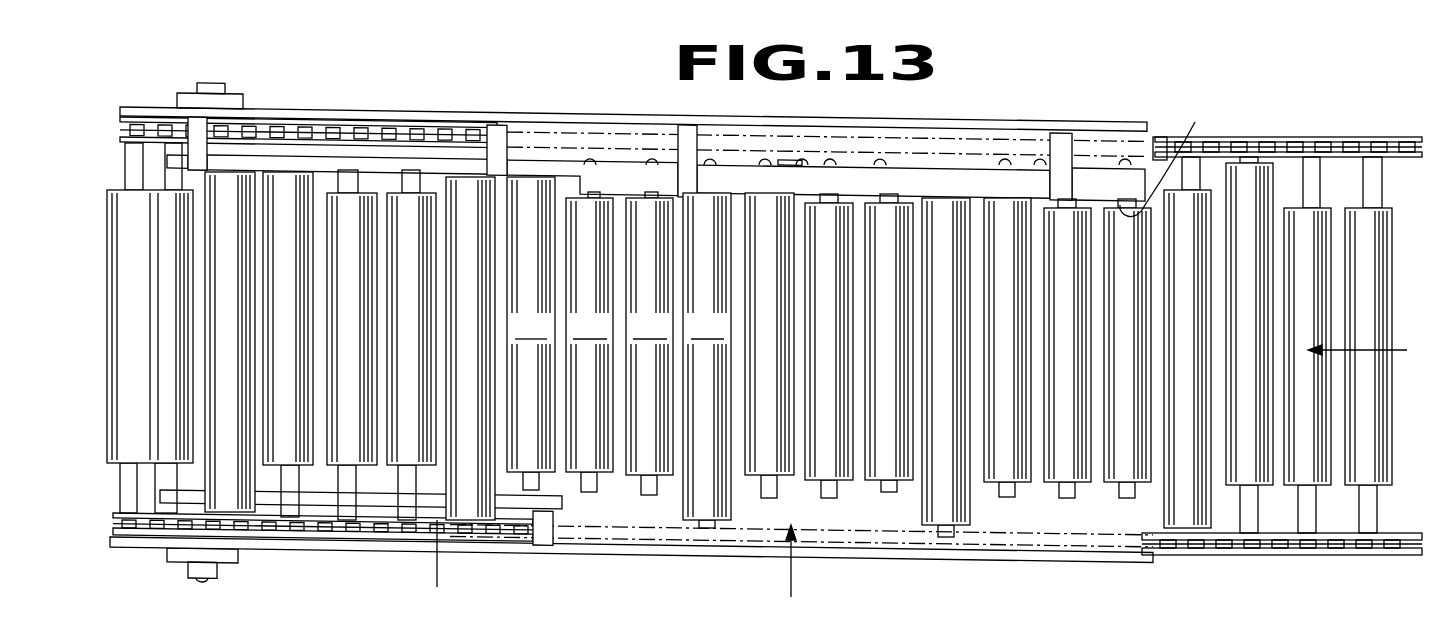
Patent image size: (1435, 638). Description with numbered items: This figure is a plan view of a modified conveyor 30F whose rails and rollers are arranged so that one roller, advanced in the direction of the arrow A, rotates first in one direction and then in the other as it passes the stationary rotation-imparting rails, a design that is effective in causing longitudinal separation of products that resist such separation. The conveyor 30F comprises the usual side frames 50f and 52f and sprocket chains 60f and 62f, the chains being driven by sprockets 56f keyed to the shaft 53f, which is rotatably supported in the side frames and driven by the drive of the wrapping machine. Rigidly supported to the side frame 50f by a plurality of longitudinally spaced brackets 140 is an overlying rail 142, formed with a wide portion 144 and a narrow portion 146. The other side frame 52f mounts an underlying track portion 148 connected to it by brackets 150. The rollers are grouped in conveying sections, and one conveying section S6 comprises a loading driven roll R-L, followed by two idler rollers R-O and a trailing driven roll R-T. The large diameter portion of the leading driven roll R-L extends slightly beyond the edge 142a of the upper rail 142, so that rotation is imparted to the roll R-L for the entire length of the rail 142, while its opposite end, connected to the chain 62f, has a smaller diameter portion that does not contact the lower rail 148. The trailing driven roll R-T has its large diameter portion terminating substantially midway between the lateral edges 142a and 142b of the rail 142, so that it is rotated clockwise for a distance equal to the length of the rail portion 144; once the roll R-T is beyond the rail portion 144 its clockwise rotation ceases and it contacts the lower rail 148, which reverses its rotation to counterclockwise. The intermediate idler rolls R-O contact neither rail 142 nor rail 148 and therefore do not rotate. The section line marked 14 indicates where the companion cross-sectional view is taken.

The conveyor 30F is at (1131, 112).
The side frame 50f is at (995, 127).
The side frame 52f is at (974, 560).
The shaft 53f is at (207, 84).
The sprockets 56f is at (278, 130).
The sprocket chain 60f is at (1345, 137).
The sprocket chain 62f is at (1236, 556).
The brackets 140 is at (196, 128).
The overlying rail 142 is at (865, 164).
The edge of upper rail 142a is at (803, 160).
The lateral edge of rail 142b is at (1183, 156).
The wide portion 144 is at (912, 173).
The narrow portion 146 is at (368, 162).
The underlying track portion 148 is at (305, 508).
The brackets 150 is at (541, 548).
The section line 14- 14 is at (616, 558).
The arrow A is at (1372, 352).
The conveying section S6 is at (737, 113).
The loading driven roll R-L is at (272, 339).
The idler rollers R-O is at (335, 339).
The trailing driven roll R-T is at (454, 339).